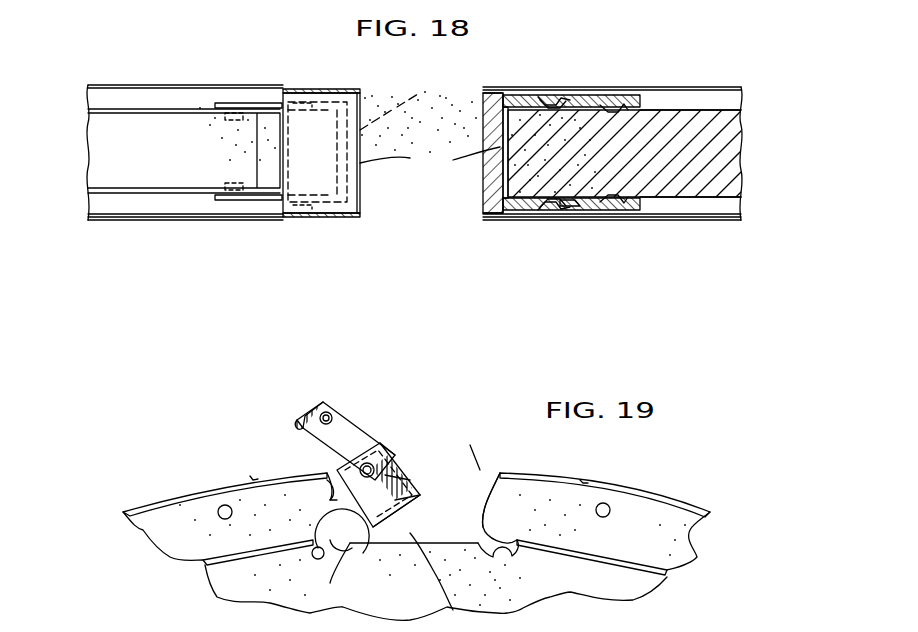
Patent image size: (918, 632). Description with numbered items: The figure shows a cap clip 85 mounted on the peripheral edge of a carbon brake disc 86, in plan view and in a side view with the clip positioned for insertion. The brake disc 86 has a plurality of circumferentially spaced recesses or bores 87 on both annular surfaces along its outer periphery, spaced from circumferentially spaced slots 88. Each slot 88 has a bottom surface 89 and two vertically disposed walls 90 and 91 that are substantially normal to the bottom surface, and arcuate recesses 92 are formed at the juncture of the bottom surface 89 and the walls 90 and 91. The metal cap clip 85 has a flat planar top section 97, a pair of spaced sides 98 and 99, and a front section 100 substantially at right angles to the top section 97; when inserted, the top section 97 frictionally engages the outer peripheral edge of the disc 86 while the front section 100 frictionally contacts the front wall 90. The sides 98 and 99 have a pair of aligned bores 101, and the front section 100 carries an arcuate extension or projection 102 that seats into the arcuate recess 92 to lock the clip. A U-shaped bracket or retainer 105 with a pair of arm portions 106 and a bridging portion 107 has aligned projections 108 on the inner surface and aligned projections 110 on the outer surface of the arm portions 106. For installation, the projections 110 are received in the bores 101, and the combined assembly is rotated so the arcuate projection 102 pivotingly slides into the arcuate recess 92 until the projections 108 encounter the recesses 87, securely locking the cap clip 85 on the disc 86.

In FIG. 18, the cap clip 85 is at (350, 226).
In FIG. 19, the cap clip 85 is at (421, 452).
In FIG. 18, the brake disc 86 is at (131, 233).
In FIG. 19, the brake disc 86 is at (203, 598).
In FIG. 18, the recesses or bores 87 is at (640, 100).
In FIG. 19, the recesses or bores 87 is at (225, 506).
In FIG. 19, the slot 88 is at (481, 428).
In FIG. 19, the bottom surface 89 is at (425, 582).
In FIG. 19, the wall 90 is at (330, 496).
In FIG. 19, the wall 91 is at (494, 485).
In FIG. 18, the arcuate recess 92 is at (345, 93).
In FIG. 19, the arcuate recess 92 is at (320, 560).
In FIG. 18, the top section 97 is at (290, 140).
In FIG. 19, the top section 97 is at (425, 492).
In FIG. 18, the side 98 is at (318, 218).
In FIG. 19, the side 98 is at (400, 455).
In FIG. 18, the side 99 is at (330, 88).
In FIG. 18, the front section 100 is at (430, 159).
In FIG. 19, the front section 100 is at (408, 510).
In FIG. 18, the aligned bores 101 is at (556, 218).
In FIG. 19, the aligned bores 101 is at (405, 470).
In FIG. 19, the arcuate extension or projection 102 is at (337, 545).
In FIG. 18, the U-shaped bracket or retainer 105 is at (226, 216).
In FIG. 19, the U-shaped bracket or retainer 105 is at (356, 408).
In FIG. 18, the arm portions 106 is at (268, 135).
In FIG. 19, the arm portions 106 is at (300, 412).
In FIG. 18, the bridging portion 107 is at (410, 105).
In FIG. 18, the projections 108 is at (618, 104).
In FIG. 19, the projections 108 is at (322, 410).
In FIG. 18, the projections 110 is at (552, 98).
In FIG. 19, the projections 110 is at (372, 462).